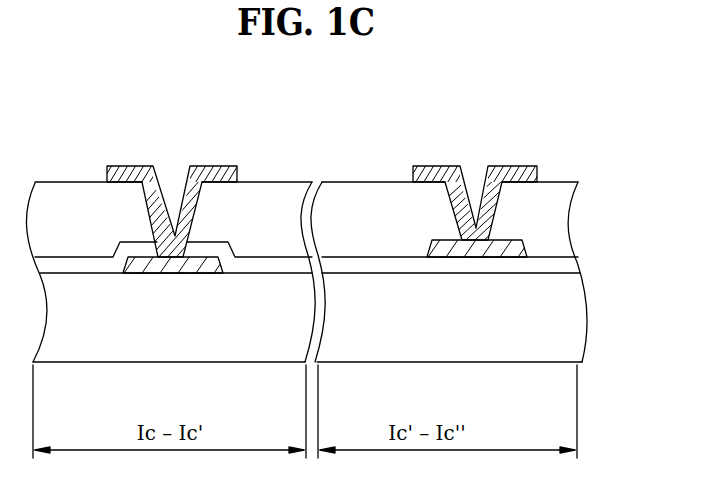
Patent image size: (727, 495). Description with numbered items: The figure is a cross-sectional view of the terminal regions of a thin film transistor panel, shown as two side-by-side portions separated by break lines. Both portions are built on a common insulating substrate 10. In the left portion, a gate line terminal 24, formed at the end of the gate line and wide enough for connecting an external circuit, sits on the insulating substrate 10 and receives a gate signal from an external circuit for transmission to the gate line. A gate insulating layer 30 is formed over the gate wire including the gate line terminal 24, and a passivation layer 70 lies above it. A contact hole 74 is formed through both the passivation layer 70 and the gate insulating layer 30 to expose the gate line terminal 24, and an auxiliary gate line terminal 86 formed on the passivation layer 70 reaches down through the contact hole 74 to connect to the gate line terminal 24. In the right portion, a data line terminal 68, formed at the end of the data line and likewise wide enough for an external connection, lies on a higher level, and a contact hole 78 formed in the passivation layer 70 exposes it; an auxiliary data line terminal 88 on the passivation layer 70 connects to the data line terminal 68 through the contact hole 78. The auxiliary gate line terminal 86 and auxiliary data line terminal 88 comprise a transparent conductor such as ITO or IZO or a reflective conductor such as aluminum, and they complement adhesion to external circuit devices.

The insulating substrate 10 is at (62, 338).
The gate line terminal 24 is at (130, 268).
The gate insulating layer 30 is at (262, 268).
The data line terminal 68 is at (468, 250).
The passivation layer 70 is at (352, 240).
The contact hole 74 is at (164, 172).
The contact hole 78 is at (470, 160).
The auxiliary gate line terminal 86 is at (217, 165).
The auxiliary data line terminal 88 is at (515, 165).